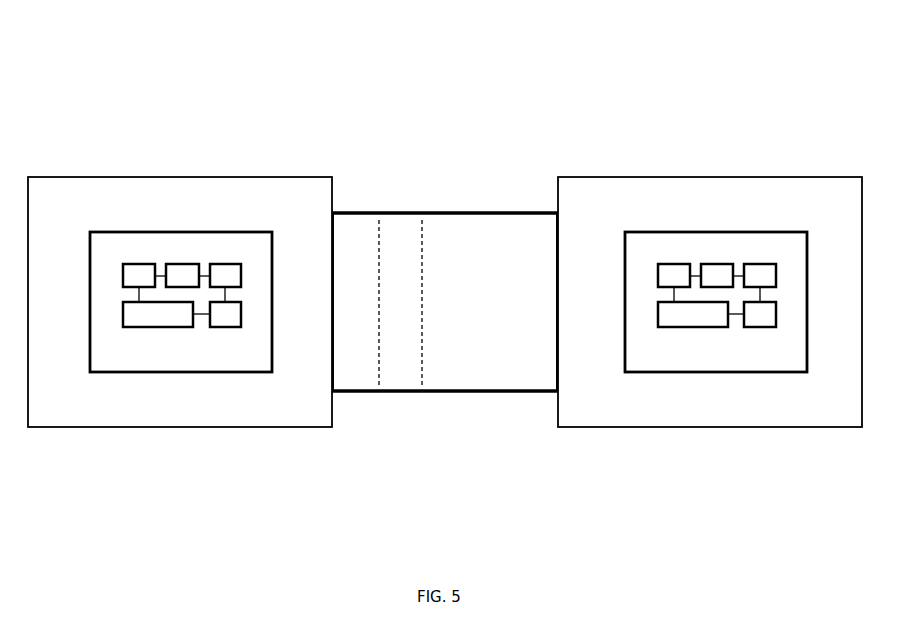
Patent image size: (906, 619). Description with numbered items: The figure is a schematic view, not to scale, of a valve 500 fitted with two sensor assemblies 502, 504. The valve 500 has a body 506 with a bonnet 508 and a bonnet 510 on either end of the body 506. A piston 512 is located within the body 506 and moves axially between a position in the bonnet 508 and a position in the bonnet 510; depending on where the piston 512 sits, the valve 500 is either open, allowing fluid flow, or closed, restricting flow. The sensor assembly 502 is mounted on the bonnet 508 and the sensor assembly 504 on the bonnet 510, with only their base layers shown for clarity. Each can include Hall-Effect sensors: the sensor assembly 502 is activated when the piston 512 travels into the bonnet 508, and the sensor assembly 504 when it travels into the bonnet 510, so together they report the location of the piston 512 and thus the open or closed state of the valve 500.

The valve 500 is at (394, 117).
The sensor assembly 502 is at (137, 232).
The sensor assembly 504 is at (683, 232).
The body 506 is at (535, 212).
The bonnet 508 is at (175, 177).
The bonnet 510 is at (727, 177).
The piston 512 is at (397, 372).